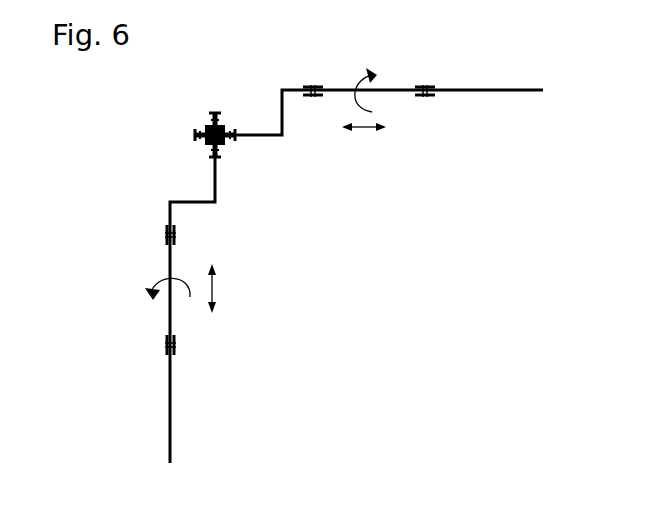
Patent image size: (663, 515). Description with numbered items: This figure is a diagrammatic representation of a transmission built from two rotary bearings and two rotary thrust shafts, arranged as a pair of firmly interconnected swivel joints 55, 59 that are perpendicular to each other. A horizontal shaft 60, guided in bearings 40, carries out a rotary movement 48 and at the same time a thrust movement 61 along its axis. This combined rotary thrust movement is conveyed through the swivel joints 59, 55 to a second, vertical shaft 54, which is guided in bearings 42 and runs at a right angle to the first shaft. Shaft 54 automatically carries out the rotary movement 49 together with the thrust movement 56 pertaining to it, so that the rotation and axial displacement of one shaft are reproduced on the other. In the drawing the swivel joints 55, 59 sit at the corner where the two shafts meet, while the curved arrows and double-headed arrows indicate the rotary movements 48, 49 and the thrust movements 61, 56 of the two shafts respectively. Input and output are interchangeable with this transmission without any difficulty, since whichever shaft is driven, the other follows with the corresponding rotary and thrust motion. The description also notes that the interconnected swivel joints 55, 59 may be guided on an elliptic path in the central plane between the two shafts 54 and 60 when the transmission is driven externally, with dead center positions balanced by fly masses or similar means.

The bearing 40 is at (313, 86).
The bearing 42 is at (166, 238).
The rotary movement 48 is at (363, 70).
The rotary movement 49 is at (148, 292).
The shaft 54 is at (170, 412).
The swivel joint 55 is at (210, 130).
The thrust movement 56 is at (214, 289).
The swivel joint 59 is at (203, 130).
The shaft 60 is at (505, 90).
The thrust movement 61 is at (364, 130).